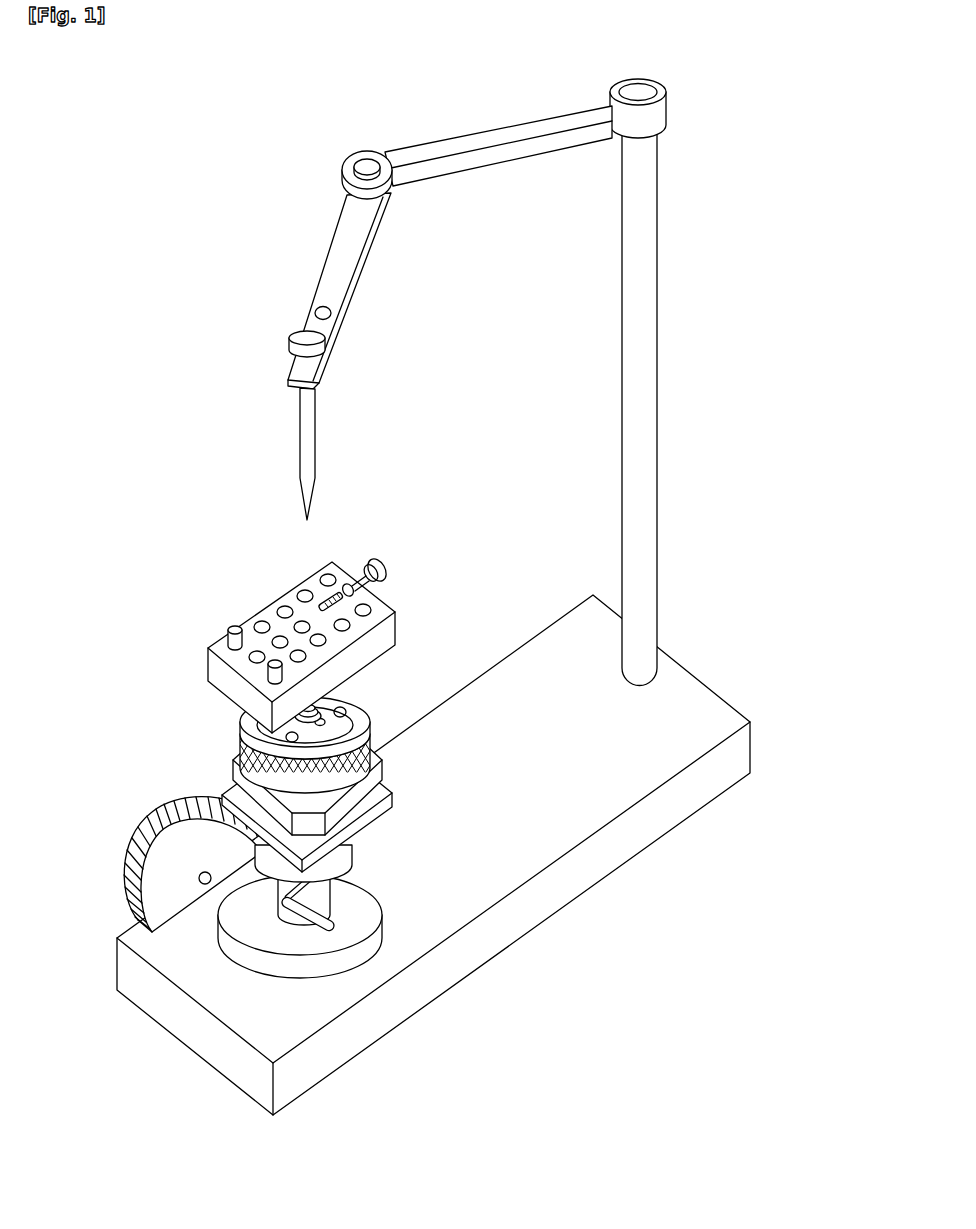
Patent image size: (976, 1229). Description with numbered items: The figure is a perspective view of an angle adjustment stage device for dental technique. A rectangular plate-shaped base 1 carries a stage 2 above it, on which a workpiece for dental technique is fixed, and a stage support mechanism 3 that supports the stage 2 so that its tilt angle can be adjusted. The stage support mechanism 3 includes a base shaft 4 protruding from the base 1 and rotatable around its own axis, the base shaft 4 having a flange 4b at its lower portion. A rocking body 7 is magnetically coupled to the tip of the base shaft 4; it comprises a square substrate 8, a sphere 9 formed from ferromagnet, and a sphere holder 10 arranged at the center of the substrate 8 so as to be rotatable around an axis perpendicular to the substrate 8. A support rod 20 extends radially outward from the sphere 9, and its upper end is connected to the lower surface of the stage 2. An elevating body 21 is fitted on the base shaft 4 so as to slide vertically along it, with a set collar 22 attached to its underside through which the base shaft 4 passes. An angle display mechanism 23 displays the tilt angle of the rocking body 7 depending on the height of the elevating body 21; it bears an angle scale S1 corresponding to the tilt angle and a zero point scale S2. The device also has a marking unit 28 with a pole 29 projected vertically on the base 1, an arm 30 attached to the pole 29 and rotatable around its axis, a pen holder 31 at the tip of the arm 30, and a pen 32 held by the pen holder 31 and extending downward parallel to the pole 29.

The base 1 is at (537, 860).
The stage 2 is at (270, 616).
The stage support mechanism 3 is at (445, 765).
The base shaft 4 is at (340, 870).
The flange 4b is at (345, 958).
The rocking body 7 is at (212, 747).
The substrate 8 is at (232, 774).
The sphere 9 is at (322, 722).
The sphere holder 10 is at (358, 706).
The support rod 20 is at (322, 703).
The elevating body 21 is at (372, 820).
The set collar 22 is at (352, 862).
The angle display mechanism 23 is at (146, 838).
The marking unit 28 is at (286, 200).
The pole 29 is at (620, 355).
The arm 30 is at (510, 155).
The pen holder 31 is at (360, 277).
The pen 32 is at (318, 442).
The angle scale S1 is at (128, 886).
The zero point scale S2 is at (140, 925).